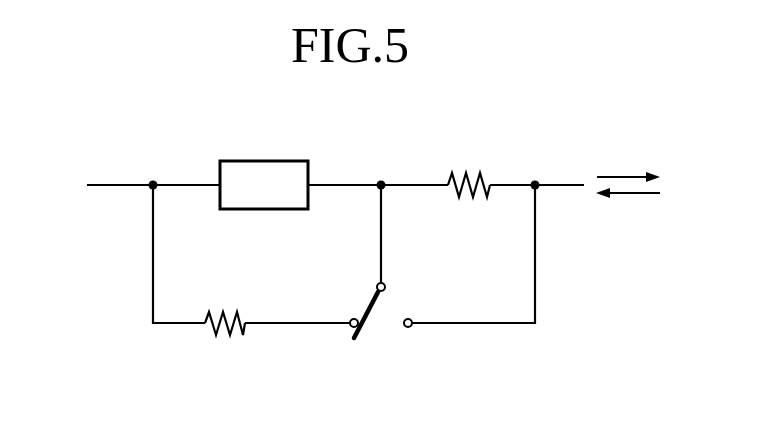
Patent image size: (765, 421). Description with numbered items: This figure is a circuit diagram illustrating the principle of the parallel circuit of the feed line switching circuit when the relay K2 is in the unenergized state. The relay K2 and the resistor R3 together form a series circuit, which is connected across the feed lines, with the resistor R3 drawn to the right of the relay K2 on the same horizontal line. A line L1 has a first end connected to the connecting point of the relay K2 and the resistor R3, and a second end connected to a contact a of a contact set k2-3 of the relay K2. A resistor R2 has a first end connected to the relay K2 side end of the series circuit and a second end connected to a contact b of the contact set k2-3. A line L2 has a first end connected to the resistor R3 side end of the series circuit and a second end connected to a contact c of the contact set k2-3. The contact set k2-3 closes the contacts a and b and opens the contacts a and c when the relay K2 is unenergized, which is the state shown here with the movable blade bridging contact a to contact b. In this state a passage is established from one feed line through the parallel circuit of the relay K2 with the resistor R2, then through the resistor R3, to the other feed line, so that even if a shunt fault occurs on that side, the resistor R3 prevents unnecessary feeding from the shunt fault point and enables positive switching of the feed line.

The relay K2 is at (264, 185).
The resistor R3 is at (469, 170).
The resistor R2 is at (225, 341).
The line L1 is at (397, 234).
The line L2 is at (473, 310).
The contact a is at (390, 281).
The contact b is at (344, 312).
The contact c is at (415, 312).
The contact set k2-3 is at (374, 331).